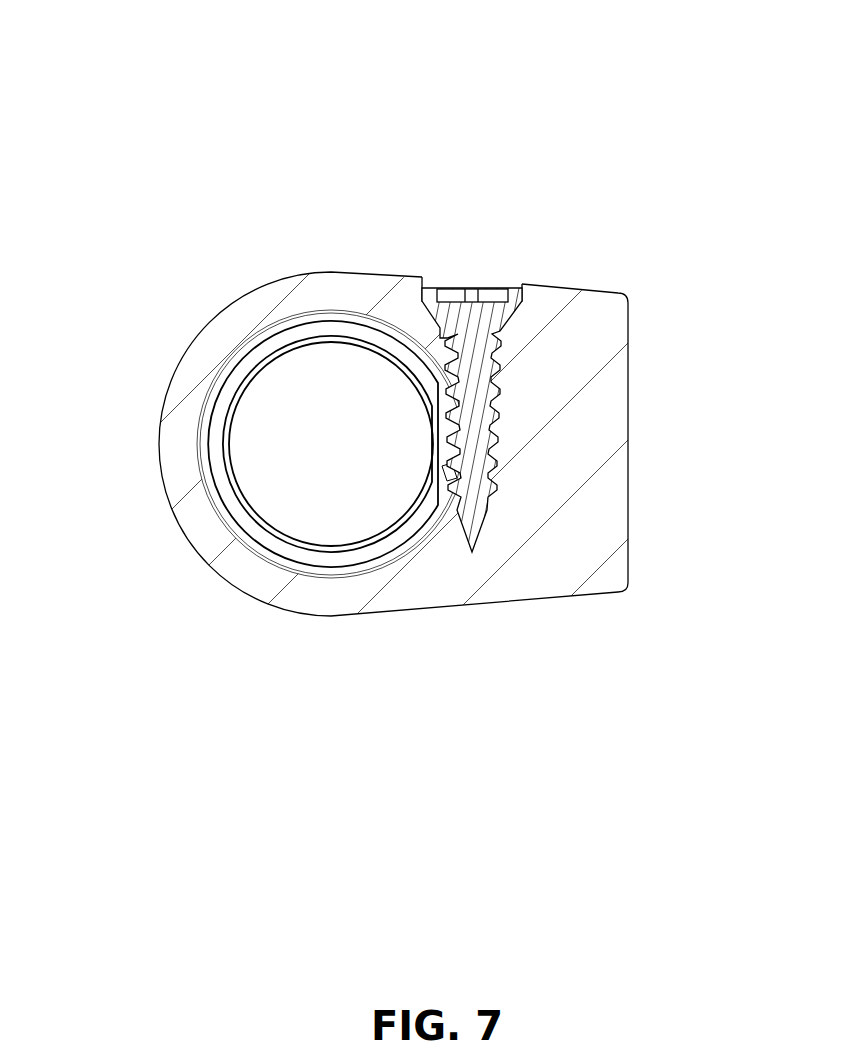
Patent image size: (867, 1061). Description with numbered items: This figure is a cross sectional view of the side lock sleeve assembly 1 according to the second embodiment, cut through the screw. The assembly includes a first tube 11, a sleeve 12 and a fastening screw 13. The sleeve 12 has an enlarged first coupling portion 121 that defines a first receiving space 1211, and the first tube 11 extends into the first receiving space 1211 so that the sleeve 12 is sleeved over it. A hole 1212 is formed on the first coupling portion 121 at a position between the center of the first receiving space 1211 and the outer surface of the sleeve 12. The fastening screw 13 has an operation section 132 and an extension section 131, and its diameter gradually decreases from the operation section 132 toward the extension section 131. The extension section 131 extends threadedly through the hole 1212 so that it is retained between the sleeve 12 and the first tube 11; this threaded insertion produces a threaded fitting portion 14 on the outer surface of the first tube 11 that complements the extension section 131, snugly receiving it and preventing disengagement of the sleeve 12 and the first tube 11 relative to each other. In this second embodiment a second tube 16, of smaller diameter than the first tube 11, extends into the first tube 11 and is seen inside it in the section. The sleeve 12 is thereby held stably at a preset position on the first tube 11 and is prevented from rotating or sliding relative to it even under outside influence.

The side lock sleeve assembly 1 is at (433, 361).
The first tube 11 is at (223, 380).
The sleeve 12 is at (433, 409).
The first coupling portion 121 is at (353, 285).
The first receiving space 1211 is at (372, 298).
The hole 1212 is at (598, 308).
The fastening screw 13 is at (521, 396).
The extension section 131 is at (477, 535).
The operation section 132 is at (512, 308).
The threaded fitting portion 14 is at (452, 472).
The second tube 16 is at (227, 452).